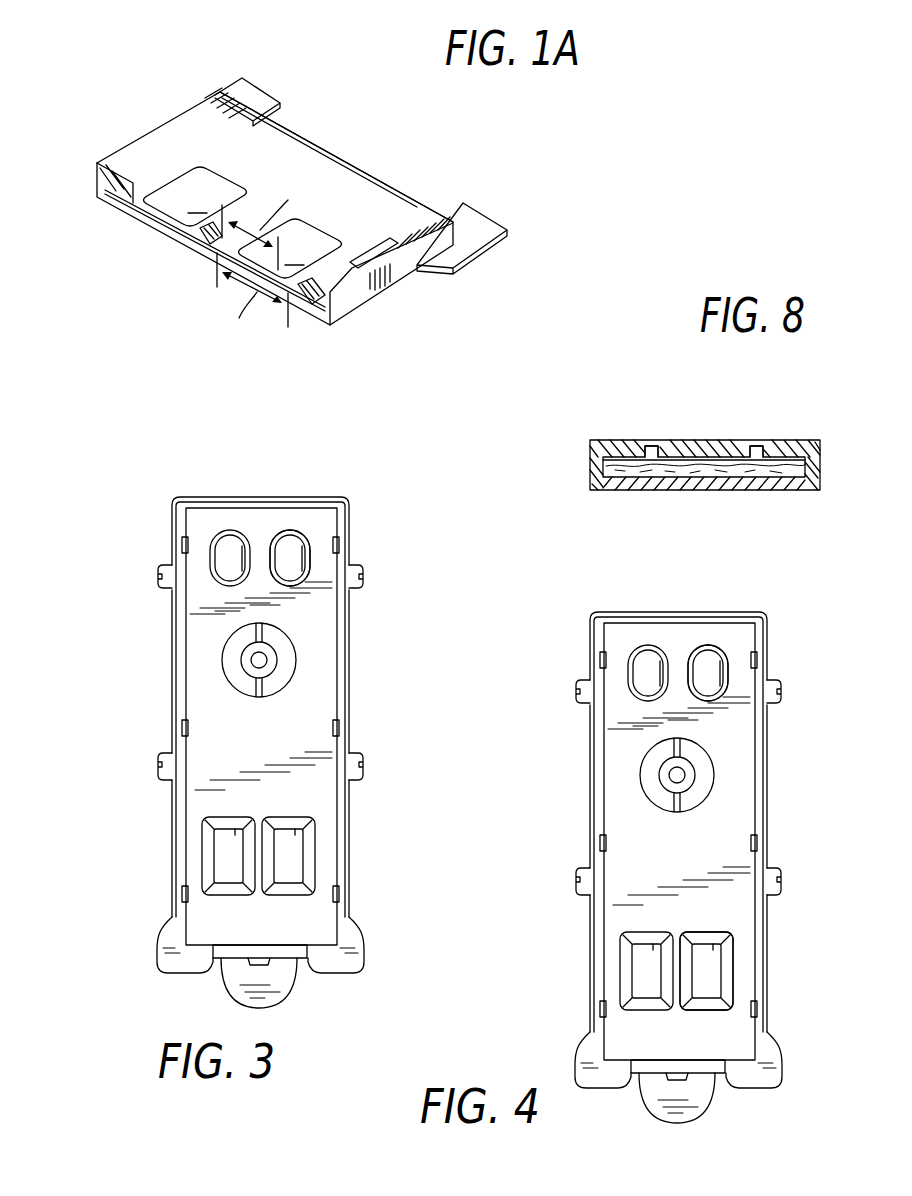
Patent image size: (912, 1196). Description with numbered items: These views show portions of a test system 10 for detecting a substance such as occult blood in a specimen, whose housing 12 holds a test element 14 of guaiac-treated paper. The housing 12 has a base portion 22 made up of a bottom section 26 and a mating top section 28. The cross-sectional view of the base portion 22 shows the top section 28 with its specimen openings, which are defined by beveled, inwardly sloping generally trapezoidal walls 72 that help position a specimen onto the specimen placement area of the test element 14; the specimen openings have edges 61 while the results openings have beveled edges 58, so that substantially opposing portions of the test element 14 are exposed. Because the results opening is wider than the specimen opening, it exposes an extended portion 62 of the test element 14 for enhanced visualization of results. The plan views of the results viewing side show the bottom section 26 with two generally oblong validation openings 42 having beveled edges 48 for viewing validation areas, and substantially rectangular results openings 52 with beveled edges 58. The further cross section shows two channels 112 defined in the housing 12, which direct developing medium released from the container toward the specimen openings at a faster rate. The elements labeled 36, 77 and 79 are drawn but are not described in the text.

In FIG. 1A, the system 10 is at (285, 195).
In FIG. 8, the system 10 is at (682, 416).
In FIG. 8, the housing 12 is at (584, 468).
In FIG. 1A, the test element 14 is at (183, 195).
In FIG. 8, the test element 14 is at (810, 464).
In FIG. 1A, the base portion 22 is at (366, 291).
In FIG. 1A, the bottom section 26 is at (250, 239).
In FIG. 3, the bottom section 26 is at (318, 627).
In FIG. 4, the bottom section 26 is at (735, 760).
In FIG. 1A, the top section 28 is at (378, 216).
In FIG. 1A, the rail 36 is at (342, 150).
In FIG. 3, the validation openings 42 is at (290, 548).
In FIG. 4, the validation openings 42 is at (645, 668).
In FIG. 3, the beveled edges 48 is at (308, 548).
In FIG. 4, the beveled edges 48 is at (725, 660).
In FIG. 4, the results openings 52 is at (650, 980).
In FIG. 1A, the beveled edges 58 is at (128, 210).
In FIG. 3, the beveled edges 58 is at (320, 858).
In FIG. 4, the beveled edges 58 is at (730, 955).
In FIG. 1A, the edges 61 is at (217, 184).
In FIG. 1A, the extended portion 62 is at (190, 245).
In FIG. 3, the extended portion 62 is at (297, 830).
In FIG. 1A, the walls 72 is at (158, 178).
In FIG. 1A, the tab 77 is at (477, 225).
In FIG. 1A, the tab 79 is at (250, 92).
In FIG. 8, the channel 112 is at (655, 445).